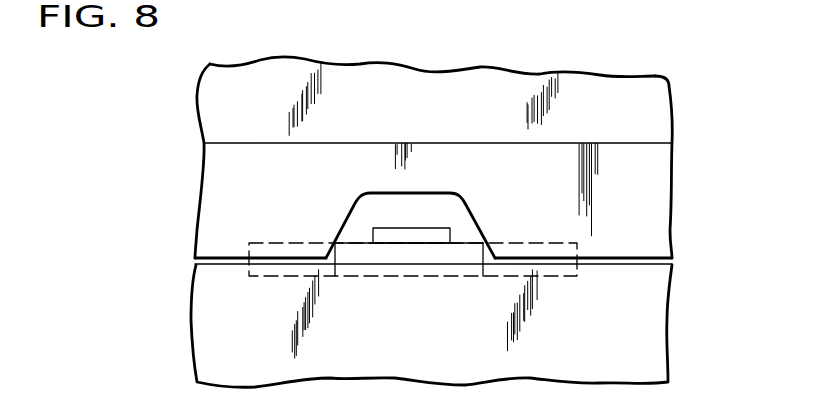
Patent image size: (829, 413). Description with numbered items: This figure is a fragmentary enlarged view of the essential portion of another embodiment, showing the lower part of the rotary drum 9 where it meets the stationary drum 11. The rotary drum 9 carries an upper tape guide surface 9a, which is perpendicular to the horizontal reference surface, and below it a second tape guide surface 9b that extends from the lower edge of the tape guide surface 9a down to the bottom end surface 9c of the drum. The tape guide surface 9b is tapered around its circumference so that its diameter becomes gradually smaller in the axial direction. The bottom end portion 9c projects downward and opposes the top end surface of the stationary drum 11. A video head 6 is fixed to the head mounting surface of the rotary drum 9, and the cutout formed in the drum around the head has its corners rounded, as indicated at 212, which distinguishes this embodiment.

The rotary drum 9 is at (670, 165).
The tape guide surface 9a is at (670, 115).
The tapered tape guide surface 9b is at (668, 205).
The bottom end surface 9c is at (658, 258).
The rounded corner of cutout 212 is at (360, 206).
The video head 6 is at (403, 243).
The stationary drum 11 is at (668, 326).